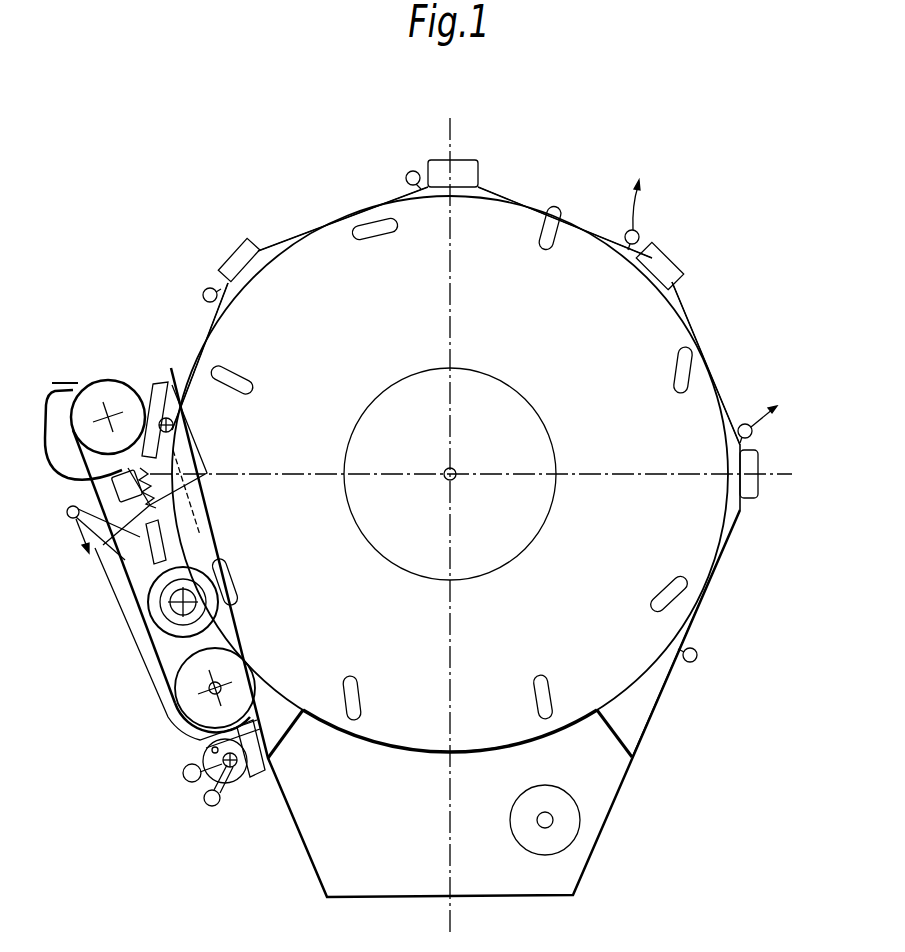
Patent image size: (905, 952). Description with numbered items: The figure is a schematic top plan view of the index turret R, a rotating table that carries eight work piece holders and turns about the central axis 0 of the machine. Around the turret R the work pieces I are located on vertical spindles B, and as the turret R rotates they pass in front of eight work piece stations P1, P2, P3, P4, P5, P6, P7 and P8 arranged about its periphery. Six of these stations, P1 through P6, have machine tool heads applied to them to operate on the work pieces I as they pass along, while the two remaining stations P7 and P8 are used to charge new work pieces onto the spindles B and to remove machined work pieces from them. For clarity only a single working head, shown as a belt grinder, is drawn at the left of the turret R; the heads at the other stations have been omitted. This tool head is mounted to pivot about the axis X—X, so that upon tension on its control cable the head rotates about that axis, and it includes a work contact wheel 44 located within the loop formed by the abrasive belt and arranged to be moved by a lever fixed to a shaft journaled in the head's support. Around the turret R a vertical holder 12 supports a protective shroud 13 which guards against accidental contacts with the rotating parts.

The vertical holder 12 is at (236, 257).
The protective shroud 13 is at (286, 240).
The work contact wheel 44 is at (167, 627).
The work piece station P1 is at (177, 648).
The work piece station P2 is at (184, 356).
The work piece station P3 is at (343, 219).
The work piece station P4 is at (565, 222).
The work piece station P5 is at (707, 363).
The work piece station P6 is at (686, 633).
The work piece station P7 is at (580, 820).
The work piece station P8 is at (288, 827).
The vertical spindle B is at (363, 242).
The work piece I is at (383, 237).
The pivot axis X is at (256, 793).
The index turret R is at (450, 474).
The central axis 0 is at (456, 469).